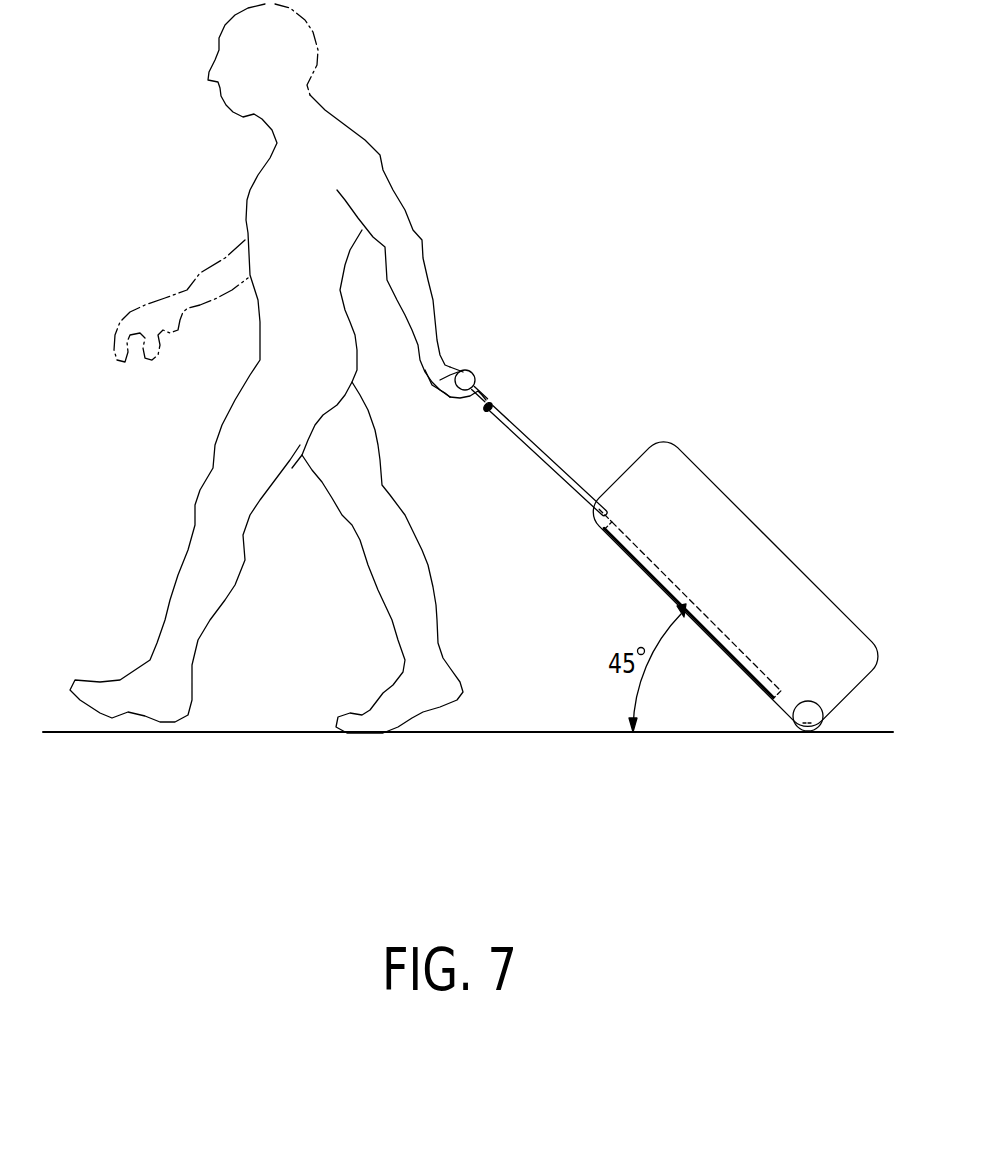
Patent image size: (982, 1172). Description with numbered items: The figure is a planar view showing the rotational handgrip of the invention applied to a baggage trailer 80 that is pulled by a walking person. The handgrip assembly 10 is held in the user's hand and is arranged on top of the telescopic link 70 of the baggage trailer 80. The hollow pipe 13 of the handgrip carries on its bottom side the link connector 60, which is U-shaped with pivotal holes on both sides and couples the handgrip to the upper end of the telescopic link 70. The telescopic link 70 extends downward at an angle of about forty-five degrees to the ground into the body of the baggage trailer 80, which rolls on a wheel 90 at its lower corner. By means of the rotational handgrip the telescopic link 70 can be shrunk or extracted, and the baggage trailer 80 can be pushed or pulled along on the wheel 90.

The ring 10 is at (470, 374).
The hollow pipe 13 is at (483, 396).
The link connector 60 is at (496, 406).
The telescopic link 70 is at (542, 456).
The baggage trailer 80 is at (728, 532).
The wheel 90 is at (816, 724).